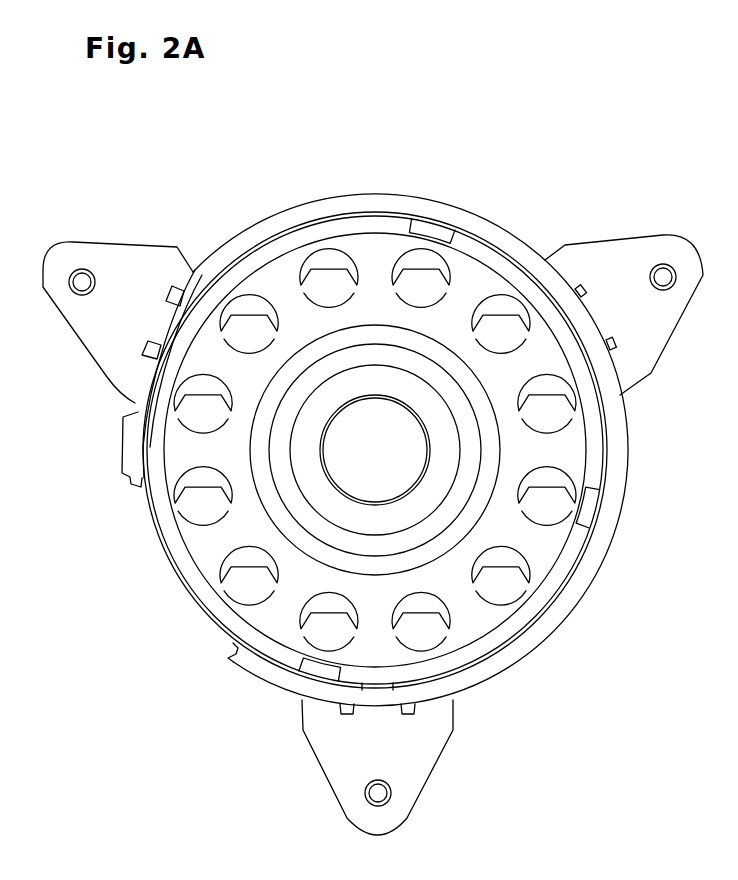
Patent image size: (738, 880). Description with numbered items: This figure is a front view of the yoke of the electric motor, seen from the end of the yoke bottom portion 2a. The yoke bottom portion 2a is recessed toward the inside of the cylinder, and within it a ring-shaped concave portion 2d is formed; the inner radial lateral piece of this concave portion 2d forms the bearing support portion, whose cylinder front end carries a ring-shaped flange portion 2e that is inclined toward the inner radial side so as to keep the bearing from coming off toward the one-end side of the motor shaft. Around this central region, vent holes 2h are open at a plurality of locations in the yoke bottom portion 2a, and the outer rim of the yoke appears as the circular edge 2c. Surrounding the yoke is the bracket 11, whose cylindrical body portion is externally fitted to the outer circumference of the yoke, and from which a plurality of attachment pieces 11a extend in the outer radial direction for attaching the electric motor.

The bracket 11 is at (567, 233).
The attachment pieces 11a is at (133, 270).
The yoke bottom portion 2a is at (545, 447).
The outer rim 2c is at (553, 620).
The concave portion 2d is at (376, 364).
The flange portion 2e is at (352, 405).
The vent holes 2h is at (502, 568).